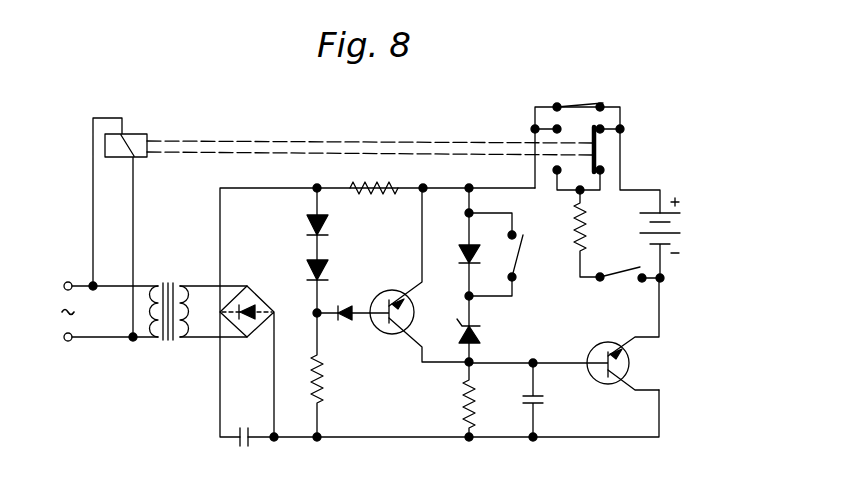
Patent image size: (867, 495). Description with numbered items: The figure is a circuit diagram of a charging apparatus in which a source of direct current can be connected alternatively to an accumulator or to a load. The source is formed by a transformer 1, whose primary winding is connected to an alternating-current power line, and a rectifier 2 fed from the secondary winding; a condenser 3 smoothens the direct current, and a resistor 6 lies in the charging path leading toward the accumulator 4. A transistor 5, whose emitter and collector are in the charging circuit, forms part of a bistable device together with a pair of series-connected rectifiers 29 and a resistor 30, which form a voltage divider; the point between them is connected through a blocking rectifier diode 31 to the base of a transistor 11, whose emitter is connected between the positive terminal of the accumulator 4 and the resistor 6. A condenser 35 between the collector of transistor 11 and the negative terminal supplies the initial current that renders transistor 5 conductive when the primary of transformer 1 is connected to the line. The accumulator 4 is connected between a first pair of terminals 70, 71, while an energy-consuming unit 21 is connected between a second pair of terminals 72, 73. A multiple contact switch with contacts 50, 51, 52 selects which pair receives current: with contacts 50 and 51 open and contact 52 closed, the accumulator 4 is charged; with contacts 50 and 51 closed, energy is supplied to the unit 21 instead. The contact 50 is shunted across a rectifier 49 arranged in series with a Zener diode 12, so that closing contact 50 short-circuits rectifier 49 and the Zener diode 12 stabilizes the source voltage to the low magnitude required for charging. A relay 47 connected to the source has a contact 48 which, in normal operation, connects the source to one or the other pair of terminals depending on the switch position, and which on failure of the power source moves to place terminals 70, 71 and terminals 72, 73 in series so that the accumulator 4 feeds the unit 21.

The transformer 1 is at (100, 339).
The rectifier 2 is at (252, 338).
The condenser 3 is at (253, 442).
The accumulator 4 is at (683, 223).
The transistor 5 is at (635, 363).
The resistor 6 is at (377, 197).
The transistor 11 is at (413, 305).
The Zener diode 12 is at (482, 333).
The energy-consuming unit 21 is at (588, 220).
The pair of rectifiers 29 is at (328, 227).
The resistor 30 is at (325, 387).
The blocking rectifier diode 31 is at (342, 318).
The condenser 35 is at (547, 400).
The relay 47 is at (128, 129).
The relay contact 48 is at (600, 147).
The rectifier 49 is at (463, 242).
The contact 50 is at (523, 252).
The contact 51 is at (617, 267).
The contact 52 is at (570, 100).
The terminal 70 is at (665, 278).
The terminal 71 is at (623, 125).
The terminal 72 is at (575, 195).
The terminal 73 is at (602, 282).